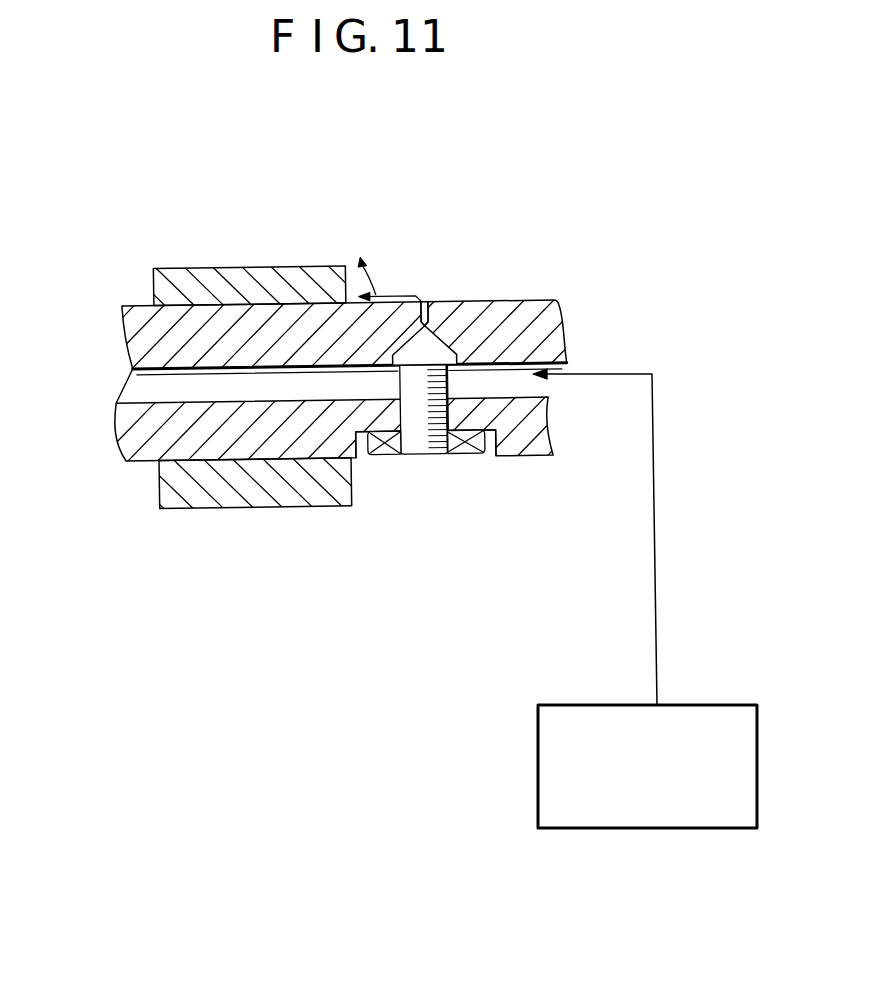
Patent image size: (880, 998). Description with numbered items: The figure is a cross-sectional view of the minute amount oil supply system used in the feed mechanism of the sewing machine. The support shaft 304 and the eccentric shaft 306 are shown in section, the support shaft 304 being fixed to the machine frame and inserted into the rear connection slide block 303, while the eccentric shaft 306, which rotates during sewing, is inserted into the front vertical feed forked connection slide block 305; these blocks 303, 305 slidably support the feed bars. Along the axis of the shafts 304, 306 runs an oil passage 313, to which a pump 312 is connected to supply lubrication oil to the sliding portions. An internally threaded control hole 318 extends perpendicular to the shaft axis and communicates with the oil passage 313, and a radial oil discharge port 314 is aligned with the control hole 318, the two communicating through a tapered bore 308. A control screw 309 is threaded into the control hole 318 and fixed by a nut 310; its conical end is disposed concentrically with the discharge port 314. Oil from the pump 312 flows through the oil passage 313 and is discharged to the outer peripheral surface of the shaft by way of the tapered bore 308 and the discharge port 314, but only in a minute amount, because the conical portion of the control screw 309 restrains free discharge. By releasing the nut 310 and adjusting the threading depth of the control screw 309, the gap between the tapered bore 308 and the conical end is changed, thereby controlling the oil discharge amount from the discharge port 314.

The rear connection slide block 303 is at (232, 241).
The front vertical feed forked connection slide block 305 is at (220, 282).
The support shaft 304 is at (347, 504).
The eccentric shaft 306 is at (528, 442).
The tapered bore 308 is at (440, 321).
The control screw 309 is at (442, 457).
The nut 310 is at (373, 458).
The pump 312 is at (553, 746).
The oil passage 313 is at (138, 372).
The oil discharge port 314 is at (429, 301).
The internally threaded control hole 318 is at (400, 458).